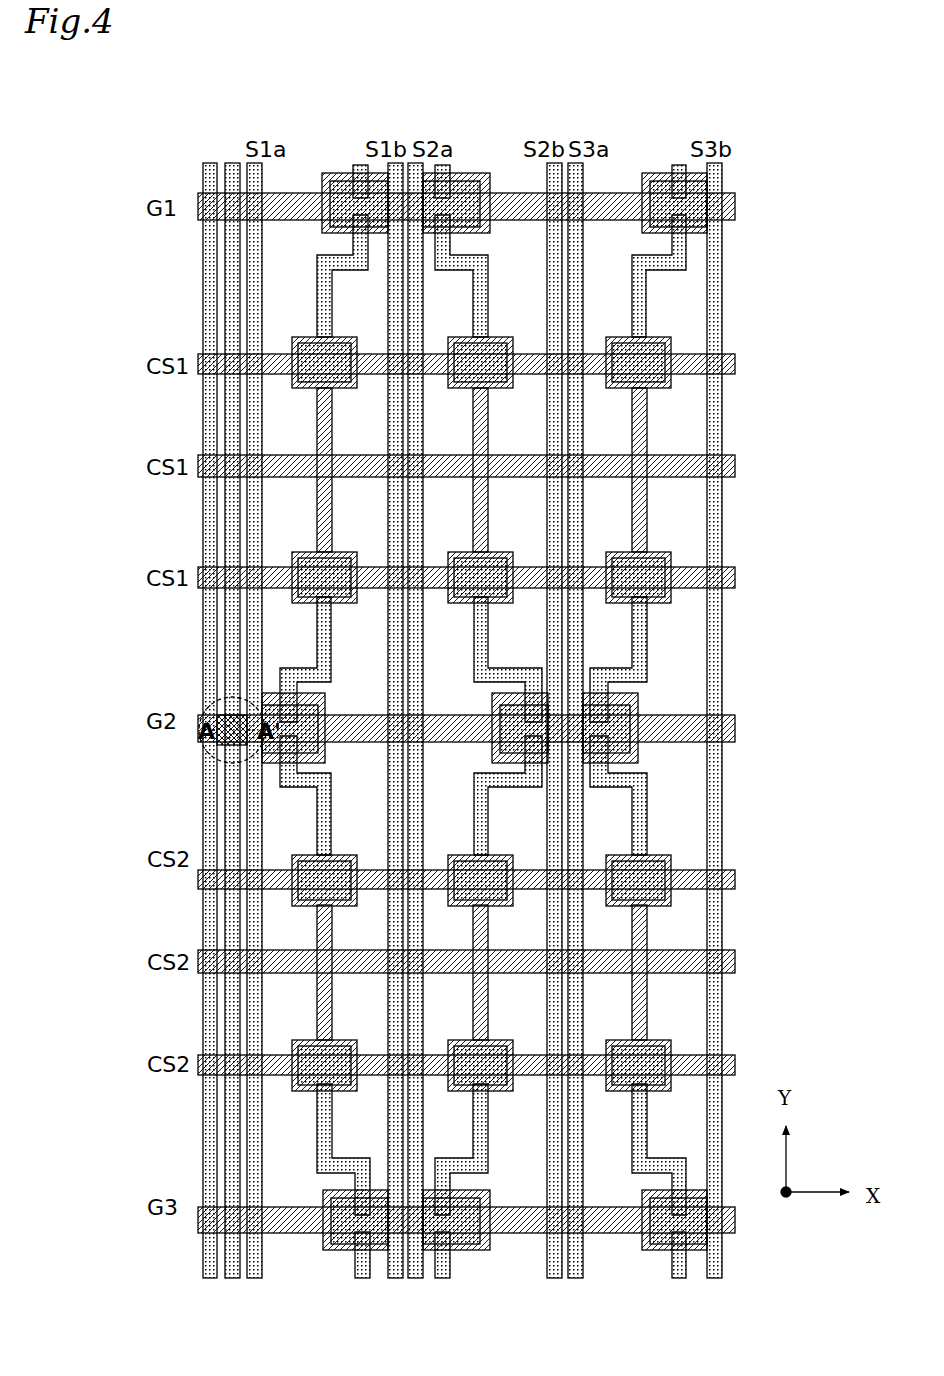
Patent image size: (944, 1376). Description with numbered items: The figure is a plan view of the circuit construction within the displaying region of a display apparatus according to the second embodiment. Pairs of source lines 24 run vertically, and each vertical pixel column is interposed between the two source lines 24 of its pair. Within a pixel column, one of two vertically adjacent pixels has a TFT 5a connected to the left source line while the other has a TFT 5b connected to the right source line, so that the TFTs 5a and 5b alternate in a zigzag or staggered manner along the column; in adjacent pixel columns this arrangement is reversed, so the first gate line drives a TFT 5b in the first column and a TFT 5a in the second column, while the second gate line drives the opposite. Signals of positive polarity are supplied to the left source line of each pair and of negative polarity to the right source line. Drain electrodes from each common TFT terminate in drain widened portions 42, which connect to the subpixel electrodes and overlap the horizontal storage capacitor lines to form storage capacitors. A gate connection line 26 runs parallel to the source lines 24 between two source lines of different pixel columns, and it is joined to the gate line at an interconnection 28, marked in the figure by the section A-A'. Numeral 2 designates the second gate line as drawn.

The gate line 2 is at (690, 717).
The source line 24 is at (584, 302).
The gate connection line 26 is at (203, 290).
The interconnection 28 is at (260, 704).
The drain widened portion 42 is at (515, 562).
The TFT 5a is at (650, 757).
The TFT 5b is at (702, 176).